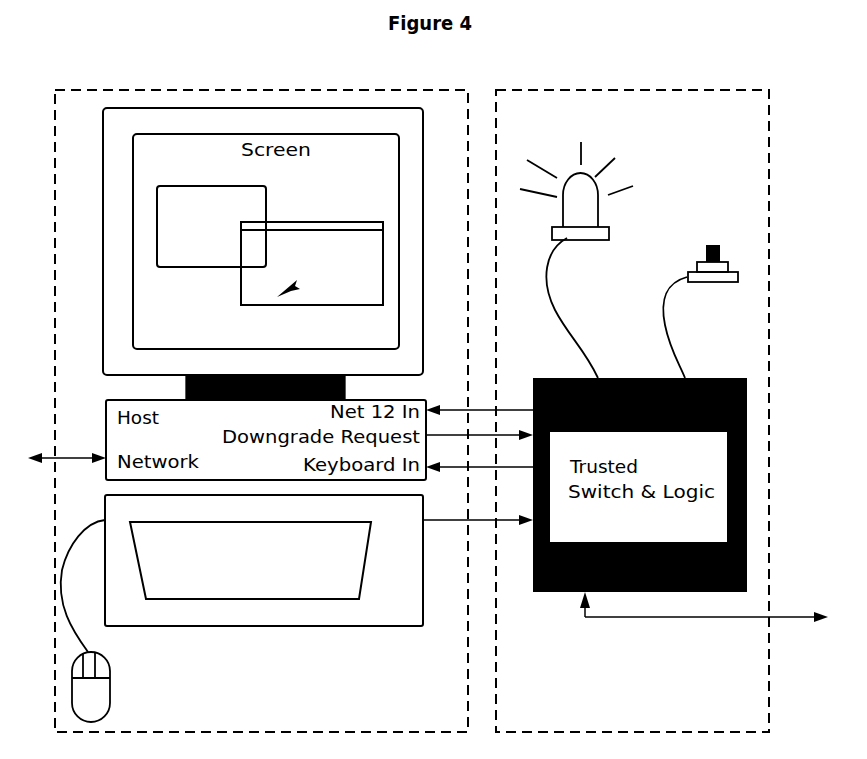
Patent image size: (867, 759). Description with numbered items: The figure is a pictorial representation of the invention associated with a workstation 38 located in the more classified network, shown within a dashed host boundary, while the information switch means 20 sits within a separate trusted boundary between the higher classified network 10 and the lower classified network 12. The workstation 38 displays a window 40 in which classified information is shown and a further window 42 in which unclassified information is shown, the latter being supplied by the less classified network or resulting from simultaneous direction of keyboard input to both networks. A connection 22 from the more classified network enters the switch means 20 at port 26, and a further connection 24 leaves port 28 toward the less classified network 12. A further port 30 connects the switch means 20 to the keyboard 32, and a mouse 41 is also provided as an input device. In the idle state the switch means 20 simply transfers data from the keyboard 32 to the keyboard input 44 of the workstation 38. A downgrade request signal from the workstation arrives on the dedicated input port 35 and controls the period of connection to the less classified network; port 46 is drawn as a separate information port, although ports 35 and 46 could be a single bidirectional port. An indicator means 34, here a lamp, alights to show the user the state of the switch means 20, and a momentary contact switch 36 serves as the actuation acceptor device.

The higher classified network 10 is at (67, 448).
The lower classified network 12 is at (809, 665).
The information switch means 20 is at (632, 411).
The connection 22 is at (481, 481).
The further connection 24 is at (706, 609).
The port 26 is at (485, 455).
The port 28 is at (570, 604).
The further port 30 is at (478, 512).
The keyboard 32 is at (264, 560).
The indicator means 34 is at (590, 260).
The dedicated input port 35 is at (479, 427).
The momentary contact switch 36 is at (708, 301).
The workstation 38 is at (261, 411).
The window 40 is at (211, 226).
The mouse 41 is at (124, 621).
The further window 42 is at (312, 263).
The keyboard input 44 is at (445, 458).
The port 46 is at (479, 397).